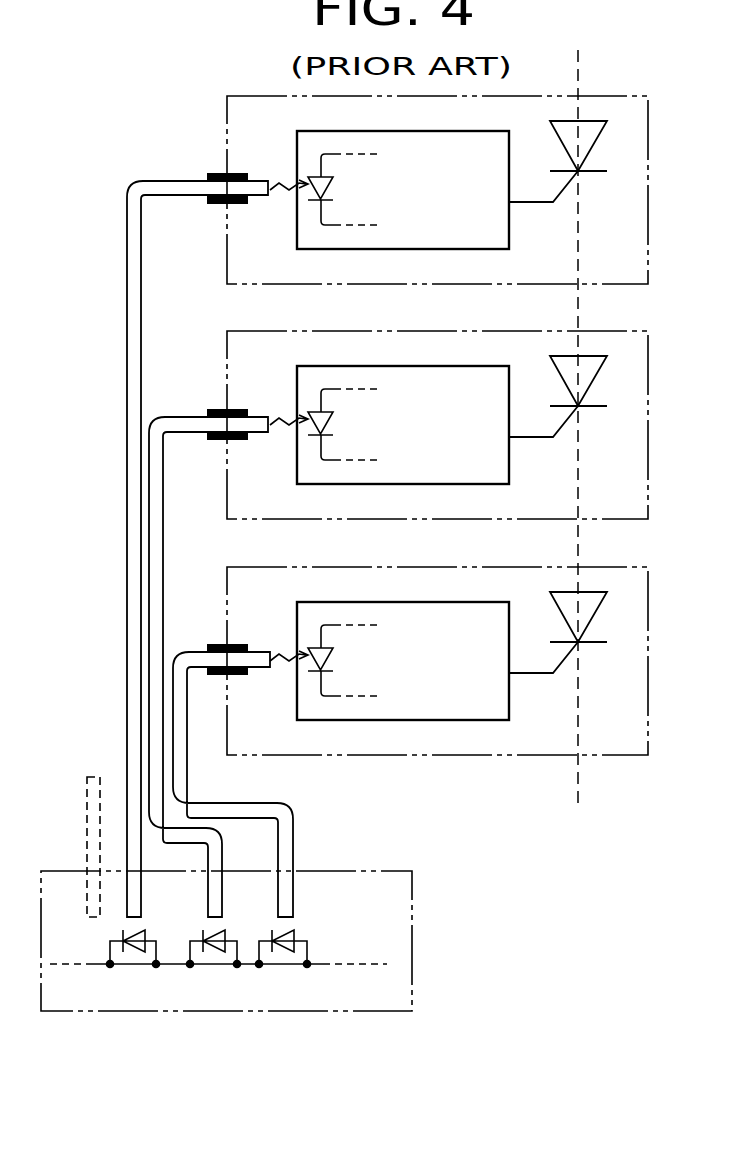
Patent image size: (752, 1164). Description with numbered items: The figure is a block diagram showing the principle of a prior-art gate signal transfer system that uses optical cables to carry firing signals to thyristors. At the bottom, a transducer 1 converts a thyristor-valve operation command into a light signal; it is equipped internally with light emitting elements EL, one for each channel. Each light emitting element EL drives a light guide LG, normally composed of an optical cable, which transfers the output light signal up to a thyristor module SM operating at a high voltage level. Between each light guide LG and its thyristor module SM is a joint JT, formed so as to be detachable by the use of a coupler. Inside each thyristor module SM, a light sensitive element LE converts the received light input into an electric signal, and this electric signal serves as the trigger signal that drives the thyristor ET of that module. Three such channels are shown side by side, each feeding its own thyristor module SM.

The thyristor module SM is at (649, 117).
The light sensitive element LE is at (310, 178).
The thyristor ET is at (581, 173).
The joint JT is at (215, 172).
The light guide LG is at (130, 636).
The light emitting element EL is at (137, 953).
The transducer 1 is at (413, 903).